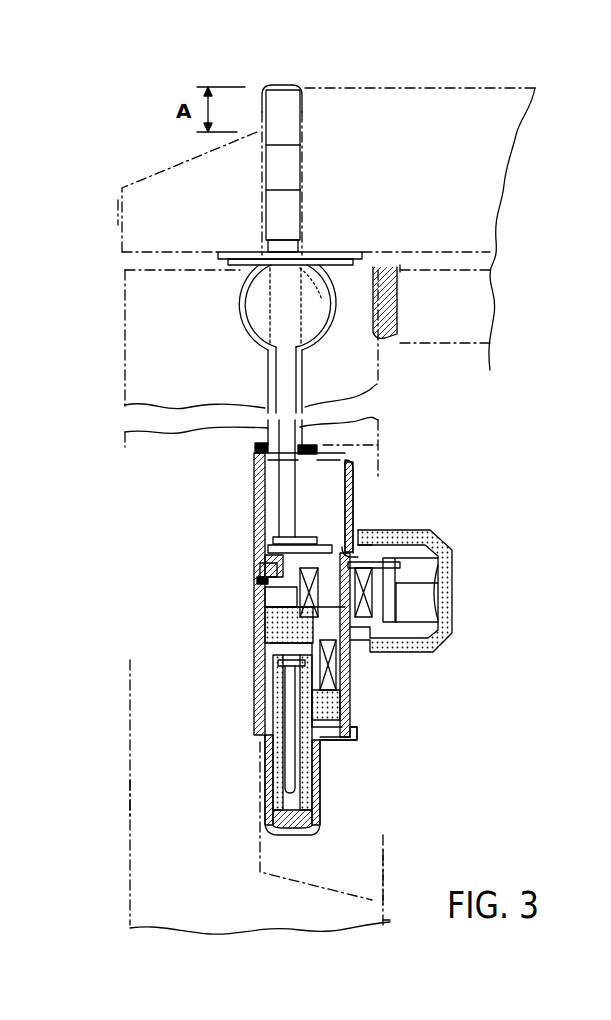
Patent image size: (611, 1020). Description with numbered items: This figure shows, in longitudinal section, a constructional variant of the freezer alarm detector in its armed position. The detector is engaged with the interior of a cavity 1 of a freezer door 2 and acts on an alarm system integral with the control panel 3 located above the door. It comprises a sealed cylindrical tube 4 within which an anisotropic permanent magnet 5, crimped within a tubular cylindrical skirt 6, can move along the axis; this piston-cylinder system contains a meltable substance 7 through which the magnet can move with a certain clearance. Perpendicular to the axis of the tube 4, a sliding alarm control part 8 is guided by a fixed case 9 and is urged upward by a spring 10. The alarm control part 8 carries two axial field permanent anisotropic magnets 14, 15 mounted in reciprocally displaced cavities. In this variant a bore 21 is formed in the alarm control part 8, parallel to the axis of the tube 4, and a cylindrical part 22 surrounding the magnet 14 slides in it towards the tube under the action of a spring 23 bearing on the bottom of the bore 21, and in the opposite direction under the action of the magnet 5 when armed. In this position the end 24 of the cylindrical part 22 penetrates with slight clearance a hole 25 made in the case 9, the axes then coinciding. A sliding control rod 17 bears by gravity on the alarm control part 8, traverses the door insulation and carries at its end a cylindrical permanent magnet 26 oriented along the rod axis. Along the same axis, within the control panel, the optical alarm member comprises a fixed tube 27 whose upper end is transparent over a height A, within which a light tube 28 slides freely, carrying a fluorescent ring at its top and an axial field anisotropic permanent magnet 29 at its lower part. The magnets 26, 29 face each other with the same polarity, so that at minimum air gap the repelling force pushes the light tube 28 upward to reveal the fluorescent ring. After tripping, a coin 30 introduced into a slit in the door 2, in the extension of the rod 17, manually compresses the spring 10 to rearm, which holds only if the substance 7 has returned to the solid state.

The cavity 1 is at (348, 874).
The freezer door 2 is at (138, 800).
The control panel 3 is at (124, 213).
The cylindrical tube 4 is at (452, 548).
The anisotropic permanent magnet 5 is at (398, 576).
The tubular cylindrical skirt 6 is at (396, 584).
The meltable substance 7 is at (410, 608).
The sliding alarm control part 8 is at (264, 640).
The fixed case 9 is at (256, 472).
The spring 10 is at (352, 736).
The permanent anisotropic magnet 14 is at (322, 586).
The permanent anisotropic magnet 15 is at (338, 666).
The sliding control rod 17 is at (282, 390).
The bore 21 is at (326, 552).
The cylindrical part 22 is at (264, 556).
The spring 23 is at (262, 568).
The end of the cylindrical part 24 is at (266, 598).
The hole 25 is at (258, 581).
The cylindrical permanent magnet 26 is at (278, 356).
The fixed tube 27 is at (262, 216).
The light tube 28 is at (290, 163).
The permanent magnet 29 is at (286, 248).
The coin 30 is at (255, 298).